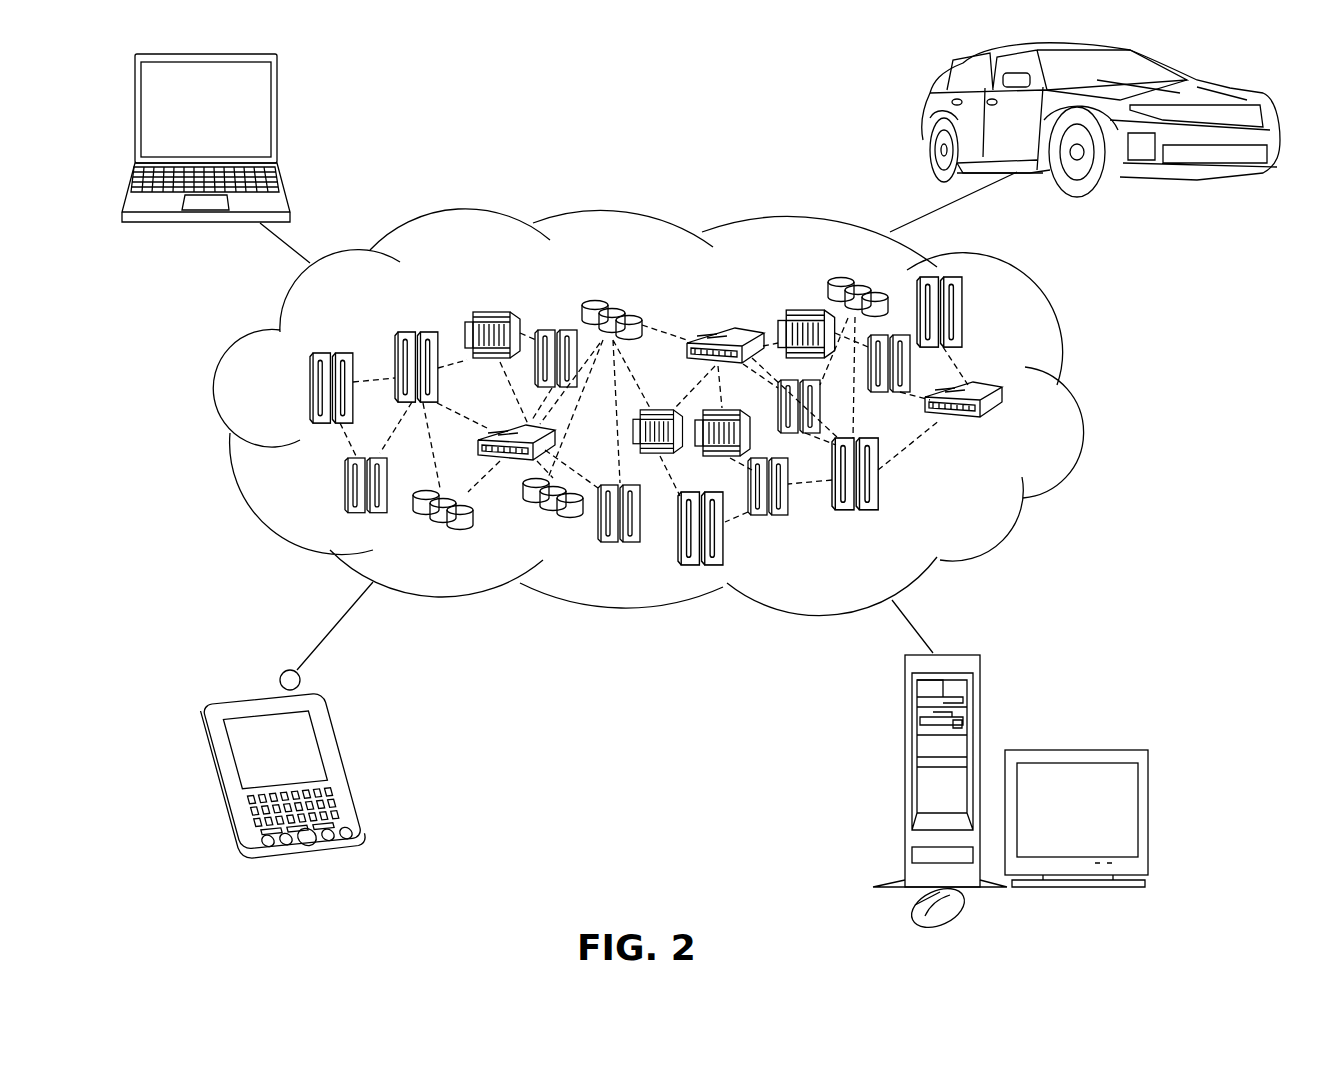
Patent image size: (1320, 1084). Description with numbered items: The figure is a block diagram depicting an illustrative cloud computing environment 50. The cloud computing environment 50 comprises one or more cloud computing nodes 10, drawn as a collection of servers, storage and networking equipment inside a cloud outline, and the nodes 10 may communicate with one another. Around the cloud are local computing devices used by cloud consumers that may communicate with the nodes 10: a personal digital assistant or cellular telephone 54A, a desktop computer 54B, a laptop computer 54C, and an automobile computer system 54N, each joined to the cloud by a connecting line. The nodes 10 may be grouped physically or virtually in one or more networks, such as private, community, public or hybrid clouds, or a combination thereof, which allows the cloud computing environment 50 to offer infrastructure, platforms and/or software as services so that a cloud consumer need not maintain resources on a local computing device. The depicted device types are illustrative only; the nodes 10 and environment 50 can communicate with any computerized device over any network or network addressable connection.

The cloud computing node 10 is at (981, 505).
The cloud computing environment 50 is at (1073, 402).
The personal digital assistant or cellular telephone 54A is at (333, 732).
The desktop computer 54B is at (905, 715).
The laptop computer 54C is at (277, 92).
The automobile computer system 54N is at (922, 108).